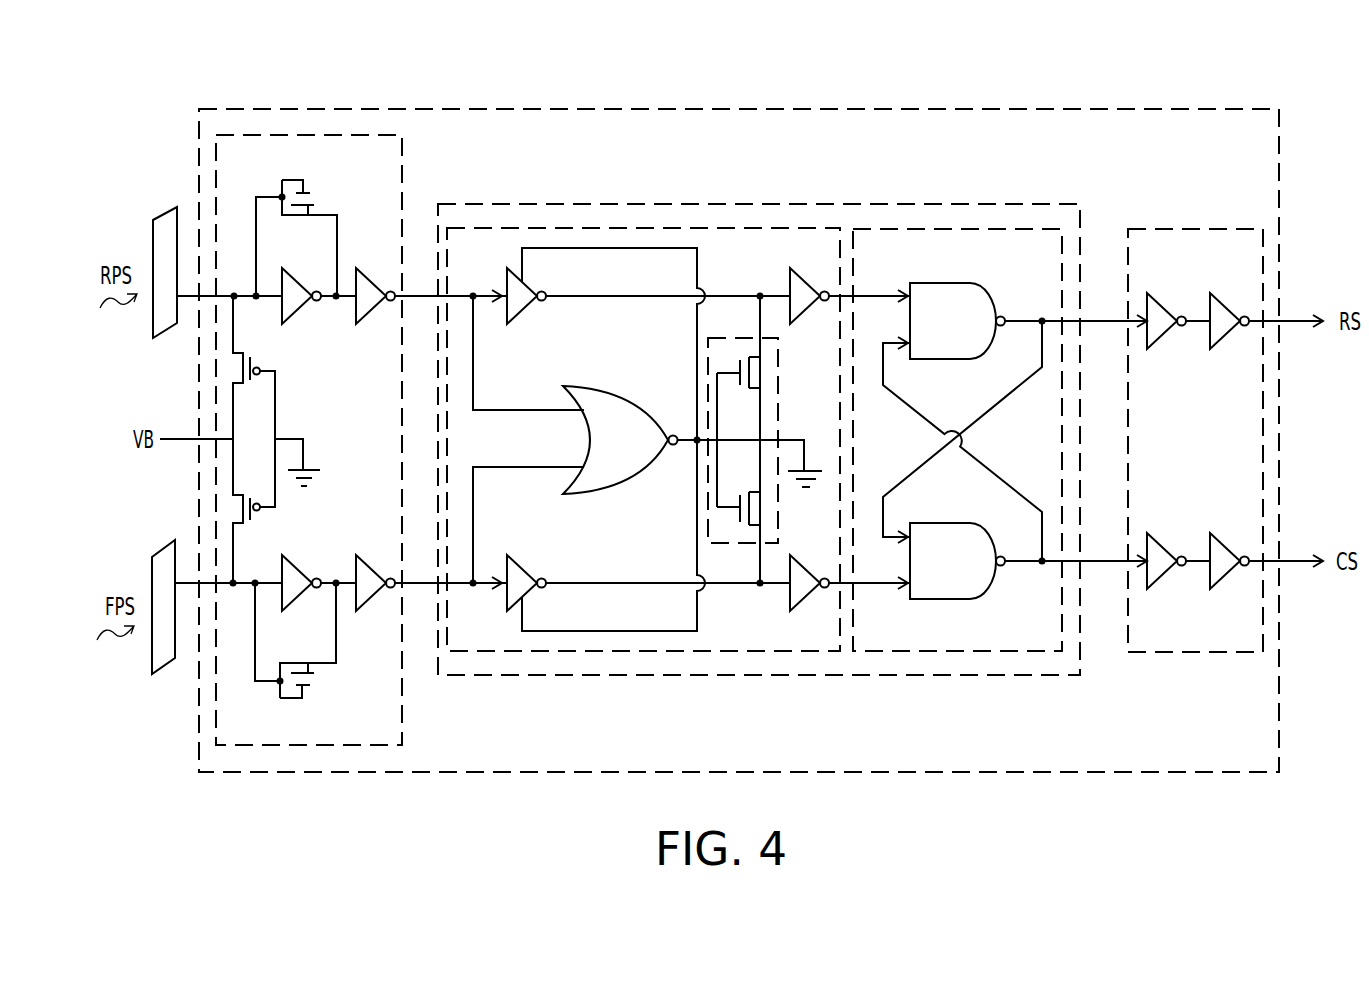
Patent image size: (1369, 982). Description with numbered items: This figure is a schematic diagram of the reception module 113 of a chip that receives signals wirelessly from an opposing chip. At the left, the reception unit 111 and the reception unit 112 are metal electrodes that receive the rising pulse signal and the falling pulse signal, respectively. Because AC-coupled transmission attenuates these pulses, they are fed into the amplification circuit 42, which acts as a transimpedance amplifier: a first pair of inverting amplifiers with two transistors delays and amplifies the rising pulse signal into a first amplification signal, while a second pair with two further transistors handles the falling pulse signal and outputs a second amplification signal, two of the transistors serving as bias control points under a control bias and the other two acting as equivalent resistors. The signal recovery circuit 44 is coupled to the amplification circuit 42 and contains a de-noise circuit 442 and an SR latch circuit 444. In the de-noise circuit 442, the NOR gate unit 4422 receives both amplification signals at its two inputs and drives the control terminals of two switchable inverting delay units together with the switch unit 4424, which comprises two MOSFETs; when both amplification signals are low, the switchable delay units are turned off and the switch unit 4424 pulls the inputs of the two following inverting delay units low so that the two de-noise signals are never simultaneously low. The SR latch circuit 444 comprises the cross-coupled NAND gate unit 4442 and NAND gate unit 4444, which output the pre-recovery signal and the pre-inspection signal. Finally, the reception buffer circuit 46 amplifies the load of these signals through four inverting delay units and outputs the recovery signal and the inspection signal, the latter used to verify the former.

The amplification circuit 42 is at (323, 133).
The signal recovery circuit 44 is at (667, 204).
The reception buffer circuit 46 is at (1177, 229).
The reception unit 111 is at (164, 207).
The reception unit 112 is at (164, 540).
The reception module 113 is at (1212, 108).
The de-noise circuit 442 is at (612, 652).
The SR latch circuit 444 is at (895, 653).
The NOR gate unit 4422 is at (605, 392).
The switch unit 4424 is at (708, 502).
The NAND gate unit 4442 is at (960, 283).
The NAND gate unit 4444 is at (960, 599).